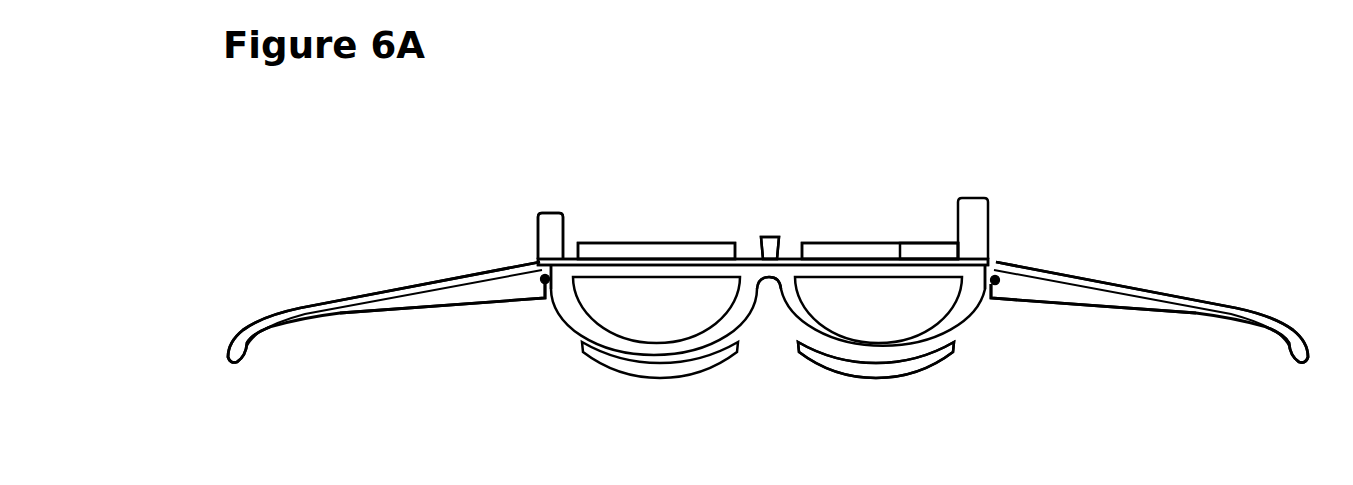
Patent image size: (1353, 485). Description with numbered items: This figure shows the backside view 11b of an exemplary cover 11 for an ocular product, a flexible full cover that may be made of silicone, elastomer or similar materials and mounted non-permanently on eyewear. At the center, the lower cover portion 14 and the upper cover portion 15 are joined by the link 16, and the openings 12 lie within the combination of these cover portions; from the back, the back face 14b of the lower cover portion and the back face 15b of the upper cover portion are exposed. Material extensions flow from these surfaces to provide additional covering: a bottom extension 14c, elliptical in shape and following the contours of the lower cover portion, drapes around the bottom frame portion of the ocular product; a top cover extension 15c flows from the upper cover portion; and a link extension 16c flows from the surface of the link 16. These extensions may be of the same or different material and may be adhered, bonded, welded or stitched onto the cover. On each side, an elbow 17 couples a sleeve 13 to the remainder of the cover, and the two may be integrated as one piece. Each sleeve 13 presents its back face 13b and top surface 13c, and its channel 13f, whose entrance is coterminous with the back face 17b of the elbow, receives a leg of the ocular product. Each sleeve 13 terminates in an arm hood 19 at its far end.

The cover 11 is at (1198, 98).
The back view of cover 11b is at (422, 392).
The openings 12 is at (722, 298).
The sleeve 13 is at (533, 265).
The back face of sleeve 13b is at (768, 296).
The top surface of sleeve 13c is at (341, 282).
The sleeve channel 13f is at (544, 275).
The lower cover portion 14 is at (783, 323).
The back face of lower cover portion 14b is at (935, 362).
The bottom extension 14c is at (592, 376).
The upper cover portion 15 is at (955, 133).
The back face of upper cover portion 15b is at (898, 250).
The top cover extension 15c is at (641, 240).
The link 16 is at (754, 248).
The link extension 16c is at (768, 222).
The elbow 17 is at (760, 208).
The back face of elbow 17b is at (555, 297).
The arm hood 19 is at (258, 293).